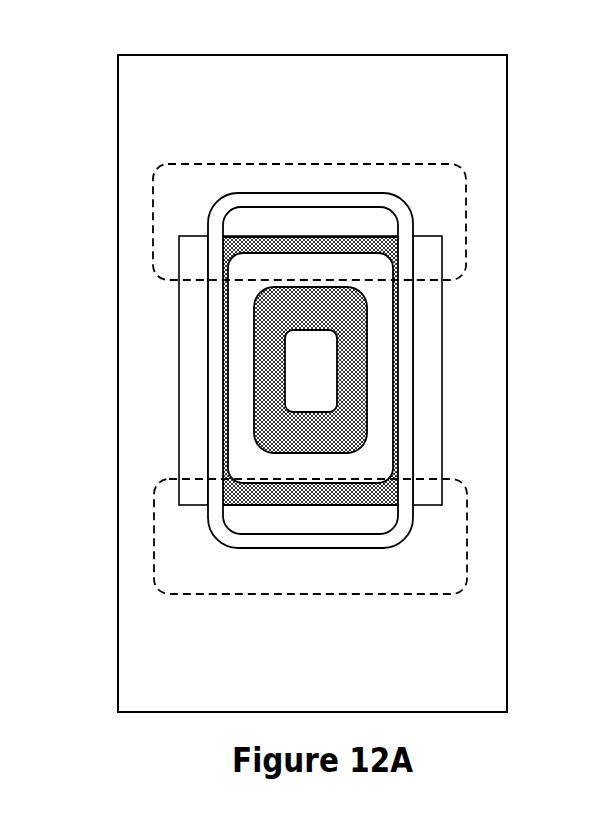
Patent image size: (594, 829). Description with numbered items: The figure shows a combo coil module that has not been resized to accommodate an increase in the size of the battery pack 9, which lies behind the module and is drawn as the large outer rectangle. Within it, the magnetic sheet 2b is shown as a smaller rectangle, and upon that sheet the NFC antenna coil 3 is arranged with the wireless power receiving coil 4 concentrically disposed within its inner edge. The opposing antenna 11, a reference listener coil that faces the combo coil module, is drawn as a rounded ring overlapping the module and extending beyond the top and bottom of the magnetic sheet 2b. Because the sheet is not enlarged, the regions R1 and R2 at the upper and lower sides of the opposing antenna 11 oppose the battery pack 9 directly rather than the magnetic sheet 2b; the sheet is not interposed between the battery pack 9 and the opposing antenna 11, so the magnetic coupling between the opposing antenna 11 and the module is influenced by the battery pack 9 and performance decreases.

The battery pack 9 is at (507, 105).
The magnetic sheet 2b is at (179, 372).
The NFC antenna coil 3 is at (303, 246).
The opposing antenna 11 is at (397, 210).
The wireless power receiving coil 4 is at (348, 362).
The region R1 is at (153, 212).
The region R2 is at (154, 538).